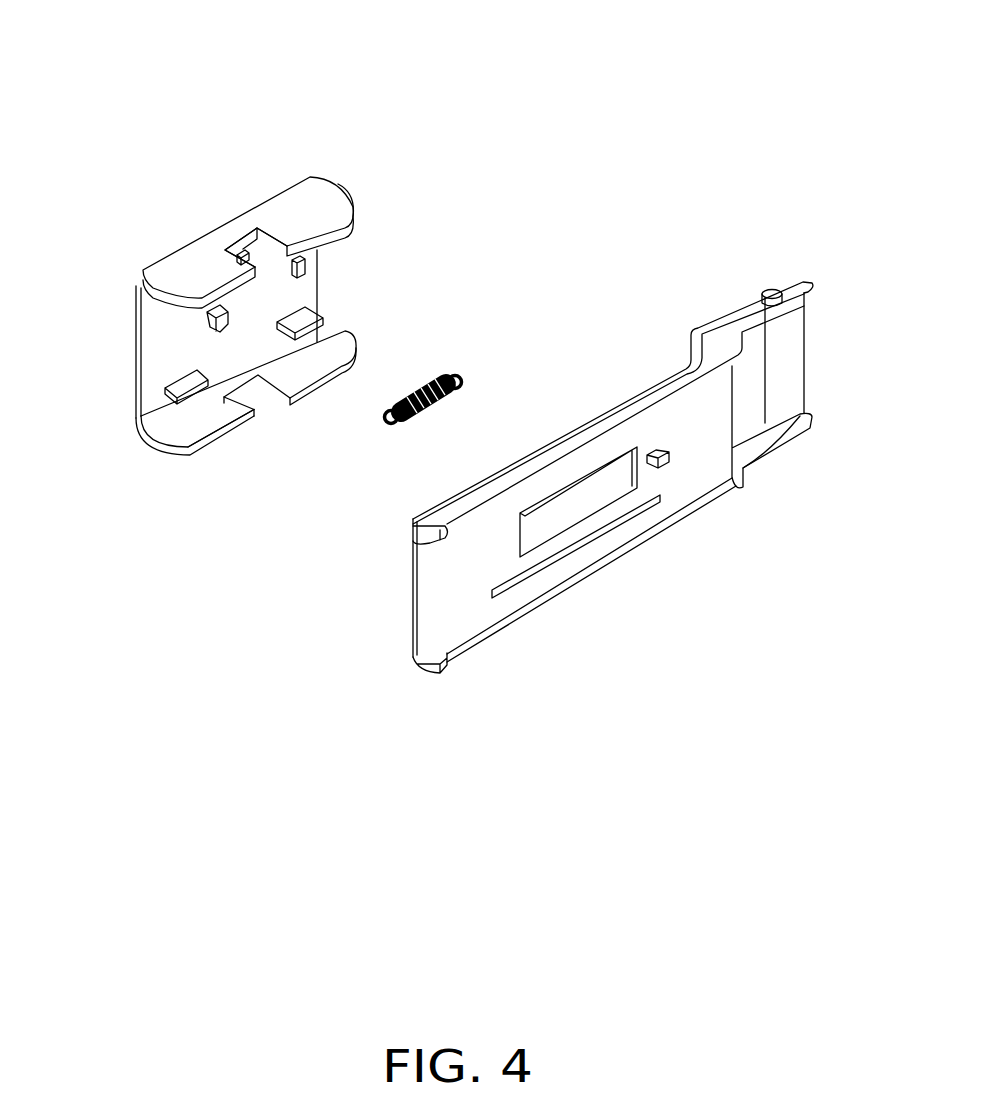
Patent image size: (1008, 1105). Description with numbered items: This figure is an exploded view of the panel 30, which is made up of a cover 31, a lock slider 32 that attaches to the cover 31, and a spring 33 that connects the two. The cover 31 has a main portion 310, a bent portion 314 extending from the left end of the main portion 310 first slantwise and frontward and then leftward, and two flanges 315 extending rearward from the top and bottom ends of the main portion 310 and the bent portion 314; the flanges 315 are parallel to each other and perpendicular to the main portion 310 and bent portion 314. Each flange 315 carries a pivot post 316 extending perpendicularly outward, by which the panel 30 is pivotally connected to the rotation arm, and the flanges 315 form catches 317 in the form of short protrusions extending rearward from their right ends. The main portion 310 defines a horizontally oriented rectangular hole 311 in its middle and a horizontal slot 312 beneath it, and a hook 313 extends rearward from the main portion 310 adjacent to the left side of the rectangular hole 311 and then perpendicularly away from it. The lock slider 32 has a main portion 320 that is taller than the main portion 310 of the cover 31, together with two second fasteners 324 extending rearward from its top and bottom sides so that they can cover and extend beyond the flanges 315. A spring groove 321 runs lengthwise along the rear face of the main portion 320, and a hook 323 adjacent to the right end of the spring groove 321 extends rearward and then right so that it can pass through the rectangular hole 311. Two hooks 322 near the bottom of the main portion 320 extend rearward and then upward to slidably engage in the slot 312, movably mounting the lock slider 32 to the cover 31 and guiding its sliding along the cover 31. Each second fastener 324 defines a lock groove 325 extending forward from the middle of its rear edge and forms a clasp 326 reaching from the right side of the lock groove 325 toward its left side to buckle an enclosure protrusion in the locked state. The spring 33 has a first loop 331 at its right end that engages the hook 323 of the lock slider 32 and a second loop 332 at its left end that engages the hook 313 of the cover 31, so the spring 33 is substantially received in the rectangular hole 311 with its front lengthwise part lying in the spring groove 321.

The panel 30 is at (430, 70).
The cover 31 is at (805, 258).
The lock slider 32 is at (345, 172).
The spring 33 is at (422, 388).
The main portion 310 is at (433, 597).
The rectangular hole 311 is at (547, 530).
The slot 312 is at (610, 527).
The hook 313 is at (669, 464).
The bent portion 314 is at (752, 380).
The flanges 315 is at (585, 435).
The pivot post 316 is at (773, 290).
The catches 317 is at (427, 535).
The main portion 320 is at (157, 322).
The spring groove 321 is at (284, 270).
The hooks 322 is at (320, 313).
The hook 323 is at (207, 318).
The second fasteners 324 is at (177, 270).
The lock groove 325 is at (263, 253).
The clasp 326 is at (240, 256).
The first loop 331 is at (385, 423).
The second loop 332 is at (455, 374).